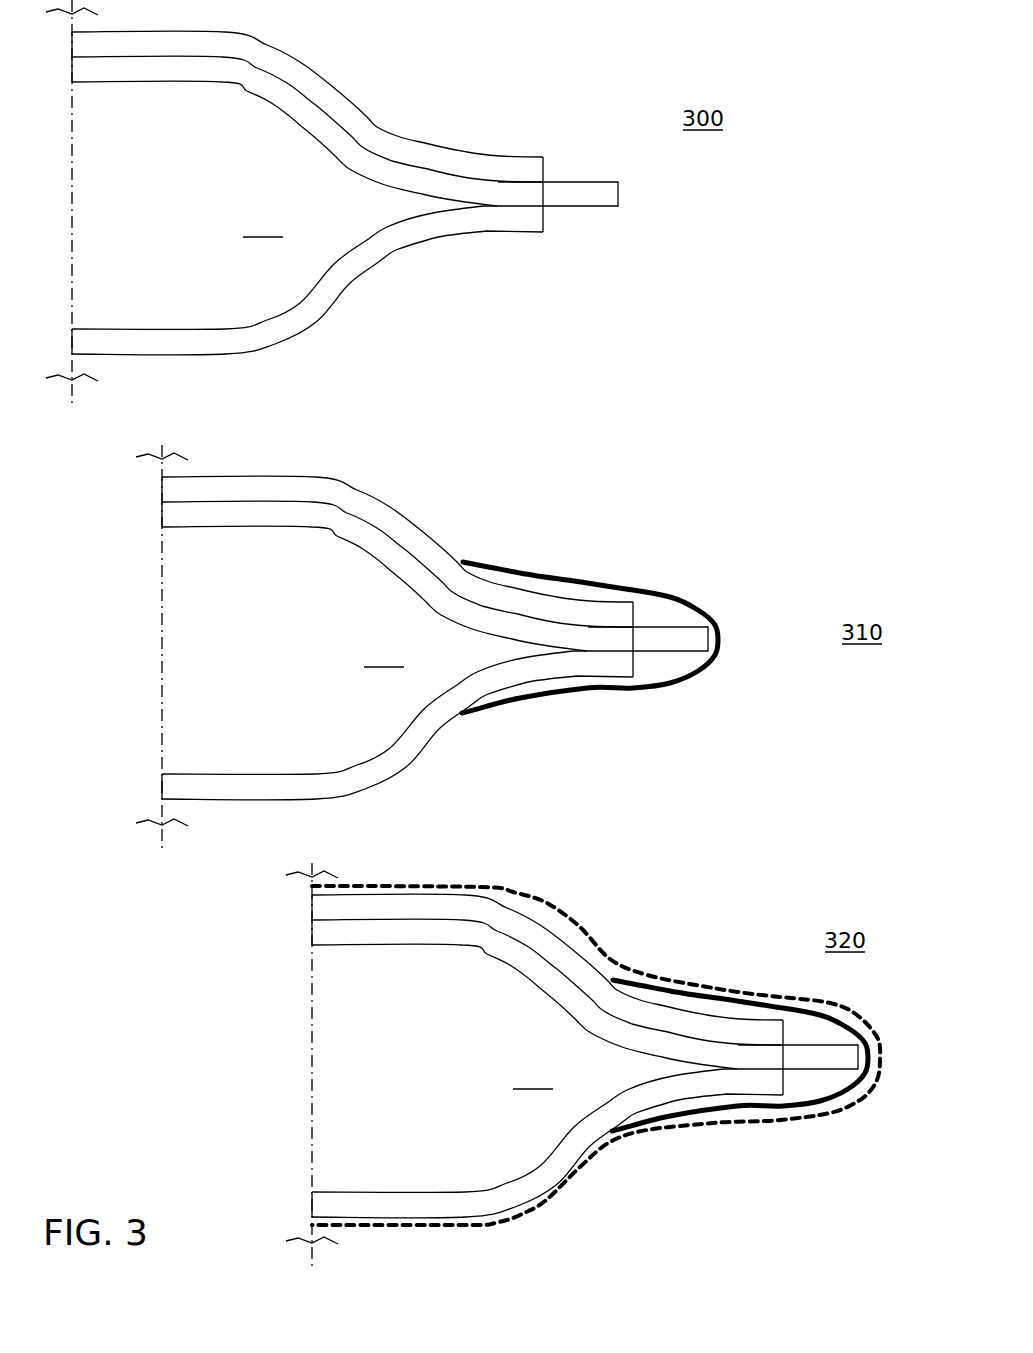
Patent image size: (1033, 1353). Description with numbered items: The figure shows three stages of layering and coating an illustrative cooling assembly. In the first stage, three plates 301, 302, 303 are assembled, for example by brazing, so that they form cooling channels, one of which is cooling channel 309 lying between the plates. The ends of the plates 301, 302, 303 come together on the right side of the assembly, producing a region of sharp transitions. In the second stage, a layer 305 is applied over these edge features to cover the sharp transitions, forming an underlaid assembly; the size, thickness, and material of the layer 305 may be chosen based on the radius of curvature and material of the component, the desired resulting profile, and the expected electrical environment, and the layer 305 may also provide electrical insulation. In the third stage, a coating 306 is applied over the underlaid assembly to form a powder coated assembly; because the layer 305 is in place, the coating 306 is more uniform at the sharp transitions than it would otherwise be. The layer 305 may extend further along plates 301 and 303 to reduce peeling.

The plate 301 is at (458, 150).
The plate 302 is at (245, 90).
The plate 303 is at (123, 328).
The layer 305 is at (714, 601).
The coating 306 is at (596, 933).
The cooling channel 309 is at (397, 651).